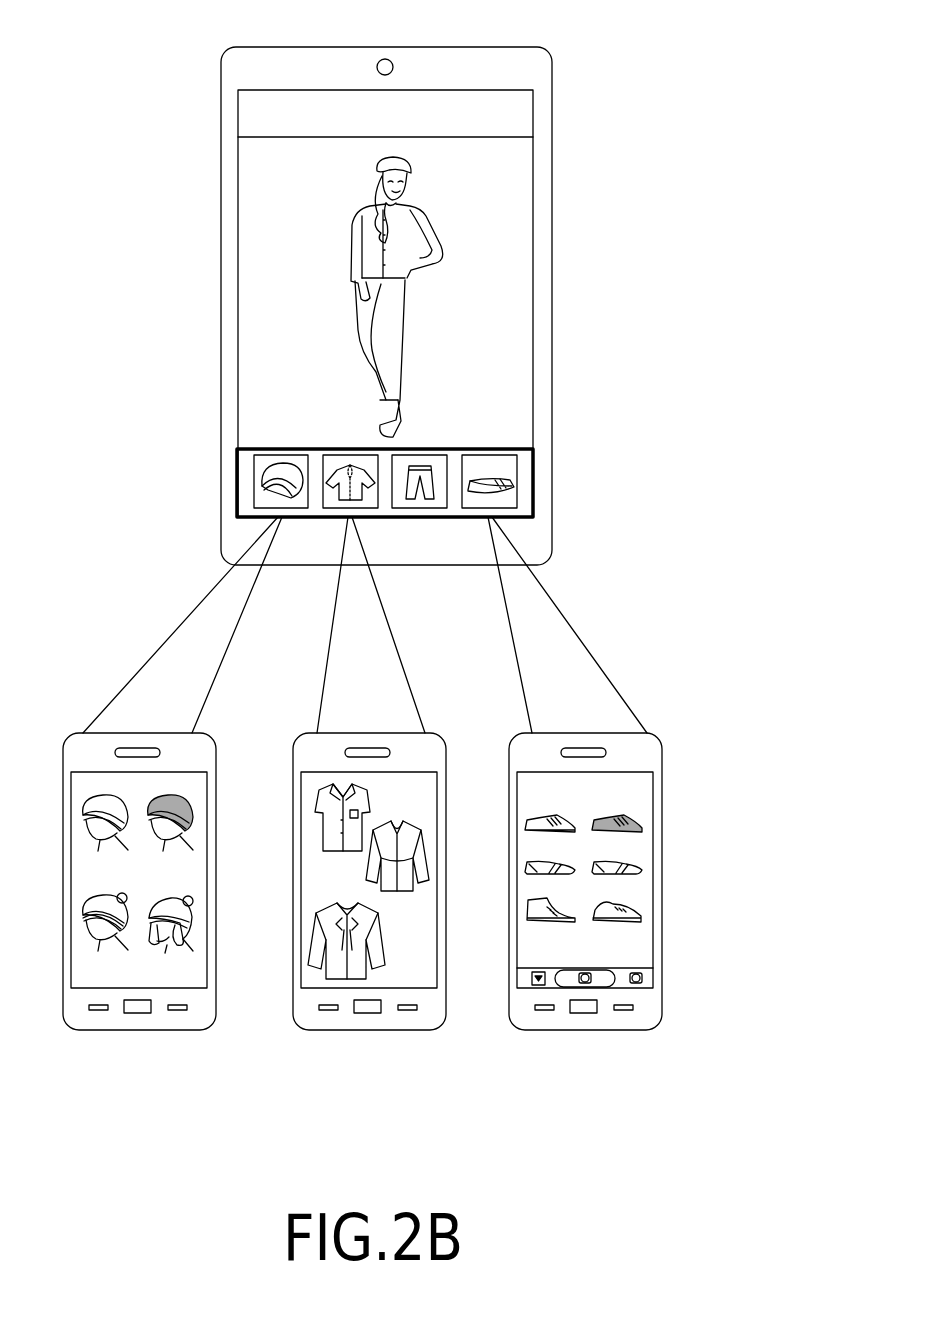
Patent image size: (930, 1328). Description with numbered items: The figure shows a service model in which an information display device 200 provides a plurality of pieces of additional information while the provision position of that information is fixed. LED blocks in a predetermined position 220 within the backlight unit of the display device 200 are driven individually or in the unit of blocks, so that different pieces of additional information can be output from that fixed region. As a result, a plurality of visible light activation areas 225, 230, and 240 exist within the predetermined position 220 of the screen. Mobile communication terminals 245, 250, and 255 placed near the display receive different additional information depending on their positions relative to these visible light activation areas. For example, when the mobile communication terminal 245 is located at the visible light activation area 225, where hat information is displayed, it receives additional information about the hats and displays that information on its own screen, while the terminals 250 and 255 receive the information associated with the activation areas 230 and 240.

The information display device 200 is at (385, 47).
The predetermined position 220 is at (534, 482).
The visible light activation area 225 is at (280, 454).
The activation area 230 is at (350, 454).
The activation area 240 is at (489, 454).
The mobile communication terminal 245 is at (138, 1030).
The mobile communication terminal 250 is at (368, 1030).
The mobile communication terminal 255 is at (586, 1030).